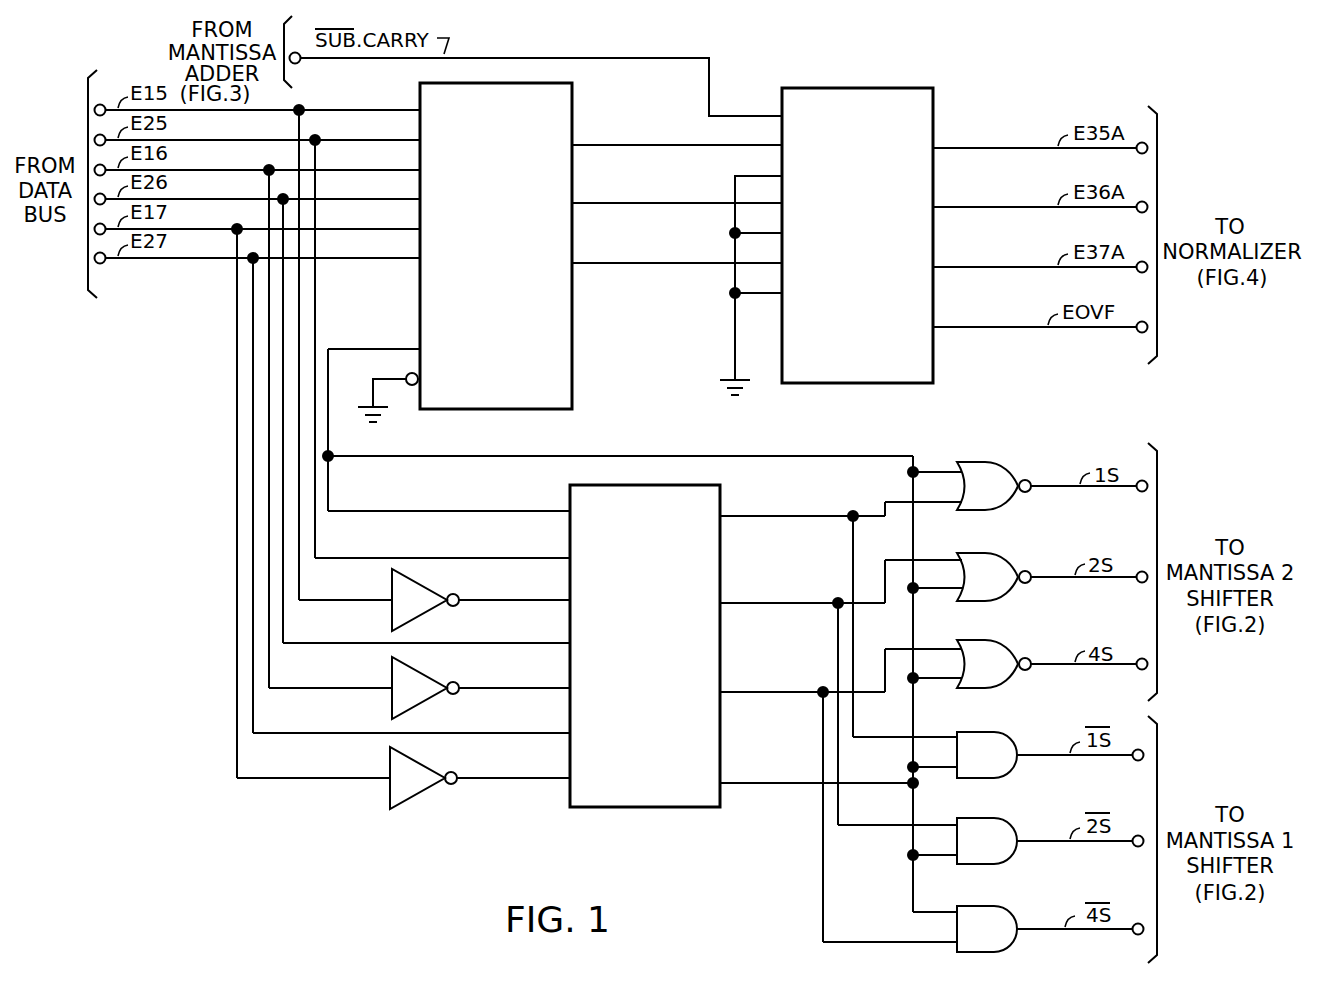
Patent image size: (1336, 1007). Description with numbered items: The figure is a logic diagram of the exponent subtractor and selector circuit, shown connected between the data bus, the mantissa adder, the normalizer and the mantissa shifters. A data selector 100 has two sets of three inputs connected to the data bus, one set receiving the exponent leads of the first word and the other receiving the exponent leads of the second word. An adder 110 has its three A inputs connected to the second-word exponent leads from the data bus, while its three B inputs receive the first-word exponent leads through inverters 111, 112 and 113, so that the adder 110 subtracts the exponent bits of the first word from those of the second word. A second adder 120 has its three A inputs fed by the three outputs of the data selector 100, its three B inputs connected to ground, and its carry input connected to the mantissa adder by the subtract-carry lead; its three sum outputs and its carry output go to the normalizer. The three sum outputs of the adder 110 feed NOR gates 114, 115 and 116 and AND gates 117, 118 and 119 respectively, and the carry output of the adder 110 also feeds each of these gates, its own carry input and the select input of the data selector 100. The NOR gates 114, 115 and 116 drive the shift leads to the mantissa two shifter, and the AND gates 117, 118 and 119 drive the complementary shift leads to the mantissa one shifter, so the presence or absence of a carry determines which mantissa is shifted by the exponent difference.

The data selector 100 is at (474, 291).
The adder 110 is at (620, 738).
The inverter 111 is at (428, 585).
The inverter 112 is at (428, 673).
The inverter 113 is at (426, 763).
The NOR gate 114 is at (999, 462).
The NOR gate 115 is at (999, 553).
The NOR gate 116 is at (999, 640).
The AND gate 117 is at (1003, 732).
The AND gate 118 is at (1003, 818).
The AND gate 119 is at (1000, 906).
The adder 120 is at (830, 293).